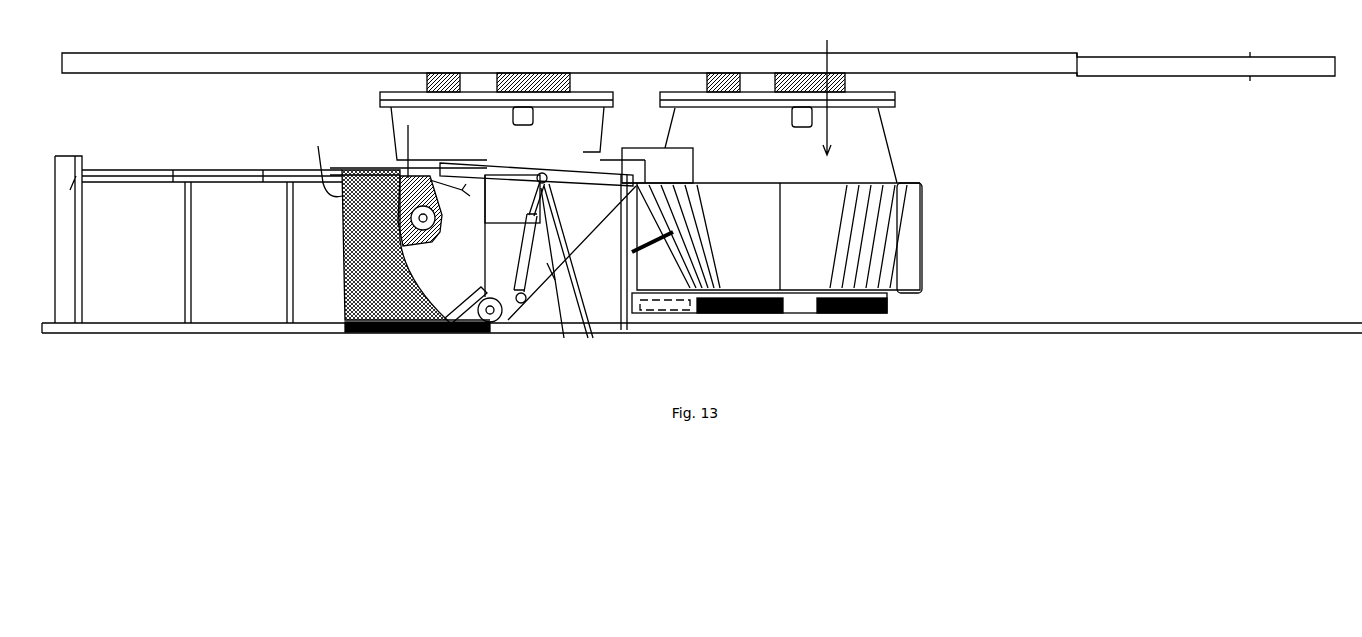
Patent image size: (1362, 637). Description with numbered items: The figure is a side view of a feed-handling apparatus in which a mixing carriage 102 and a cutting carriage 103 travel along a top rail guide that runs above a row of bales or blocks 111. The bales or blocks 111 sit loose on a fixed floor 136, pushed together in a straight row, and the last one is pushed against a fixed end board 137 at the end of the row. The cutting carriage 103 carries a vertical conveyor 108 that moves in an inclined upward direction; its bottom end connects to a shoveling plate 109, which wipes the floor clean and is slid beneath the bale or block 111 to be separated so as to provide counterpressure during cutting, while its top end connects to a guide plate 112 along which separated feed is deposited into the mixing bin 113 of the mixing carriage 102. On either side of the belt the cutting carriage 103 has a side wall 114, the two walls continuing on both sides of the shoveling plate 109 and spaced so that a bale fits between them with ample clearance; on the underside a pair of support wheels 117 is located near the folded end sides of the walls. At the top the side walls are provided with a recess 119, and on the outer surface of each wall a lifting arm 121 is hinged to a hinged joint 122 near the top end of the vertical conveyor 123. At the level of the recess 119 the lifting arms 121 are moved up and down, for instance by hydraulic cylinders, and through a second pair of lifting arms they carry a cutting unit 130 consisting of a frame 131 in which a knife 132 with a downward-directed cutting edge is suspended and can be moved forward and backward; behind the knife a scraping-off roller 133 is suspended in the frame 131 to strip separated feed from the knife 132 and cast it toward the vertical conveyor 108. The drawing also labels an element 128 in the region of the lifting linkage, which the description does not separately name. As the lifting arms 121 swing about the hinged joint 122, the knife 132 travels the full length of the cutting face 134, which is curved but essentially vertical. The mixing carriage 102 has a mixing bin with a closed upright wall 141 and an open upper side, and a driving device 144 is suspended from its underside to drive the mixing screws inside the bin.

The mixing carriage 102 is at (748, 45).
The cutting carriage 103 is at (533, 45).
The vertical conveyor 108 is at (475, 337).
The shoveling plate 109 is at (447, 334).
The bale or block 111 is at (307, 316).
The guide plate 112 is at (651, 147).
The mixing bin 113 is at (823, 84).
The side wall 114 is at (563, 330).
The support wheels 117 is at (506, 337).
The recess 119 is at (555, 280).
The lifting arm 121 is at (544, 175).
The hinged joint 122 is at (612, 325).
The vertical conveyor 123 is at (525, 306).
The tilting frame 128 is at (500, 168).
The cutting unit 130 is at (424, 151).
The frame 131 is at (398, 178).
The knife 132 is at (394, 335).
The scraping-off roller 133 is at (428, 335).
The cutting face 134 is at (320, 161).
The fixed floor 136 is at (163, 334).
The fixed end board 137 is at (70, 192).
The closed upright wall 141 is at (800, 237).
The driving device 144 is at (748, 314).